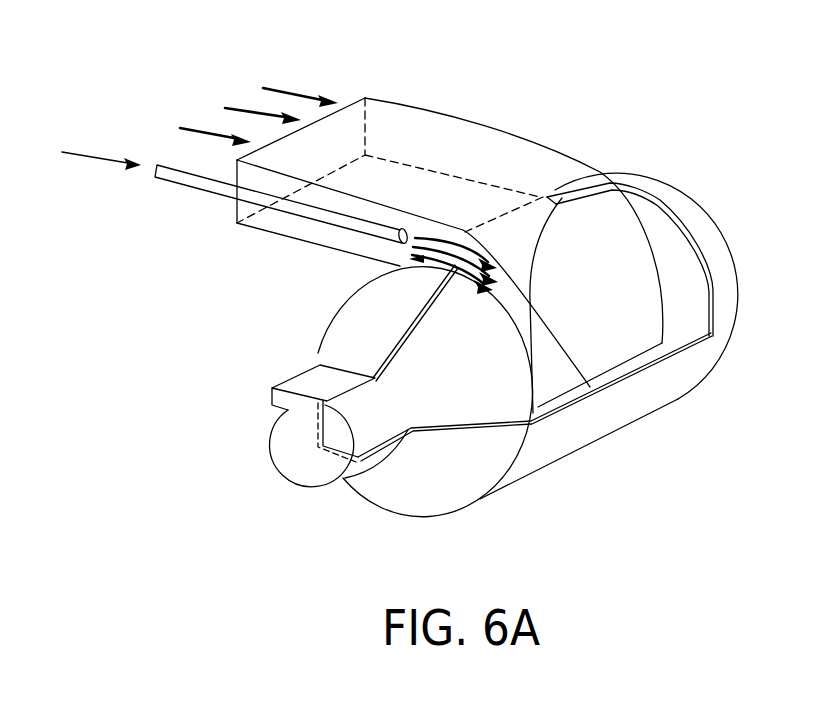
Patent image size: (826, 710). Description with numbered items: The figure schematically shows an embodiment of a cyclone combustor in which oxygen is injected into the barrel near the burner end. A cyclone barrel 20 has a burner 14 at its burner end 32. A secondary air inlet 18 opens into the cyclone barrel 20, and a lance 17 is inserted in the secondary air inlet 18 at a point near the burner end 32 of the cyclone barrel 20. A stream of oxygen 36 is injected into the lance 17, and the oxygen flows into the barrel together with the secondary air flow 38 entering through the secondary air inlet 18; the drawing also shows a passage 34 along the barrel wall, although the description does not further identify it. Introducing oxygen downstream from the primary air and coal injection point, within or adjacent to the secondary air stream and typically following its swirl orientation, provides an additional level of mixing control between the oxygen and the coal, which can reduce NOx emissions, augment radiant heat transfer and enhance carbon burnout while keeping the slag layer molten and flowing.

The burner 14 is at (293, 481).
The lance 17 is at (186, 186).
The secondary air inlet 18 is at (461, 117).
The cyclone barrel 20 is at (613, 423).
The burner end 32 is at (262, 465).
The air channel strip 34 is at (746, 265).
The stream of oxygen 36 is at (87, 157).
The secondary air flow 38 is at (282, 92).